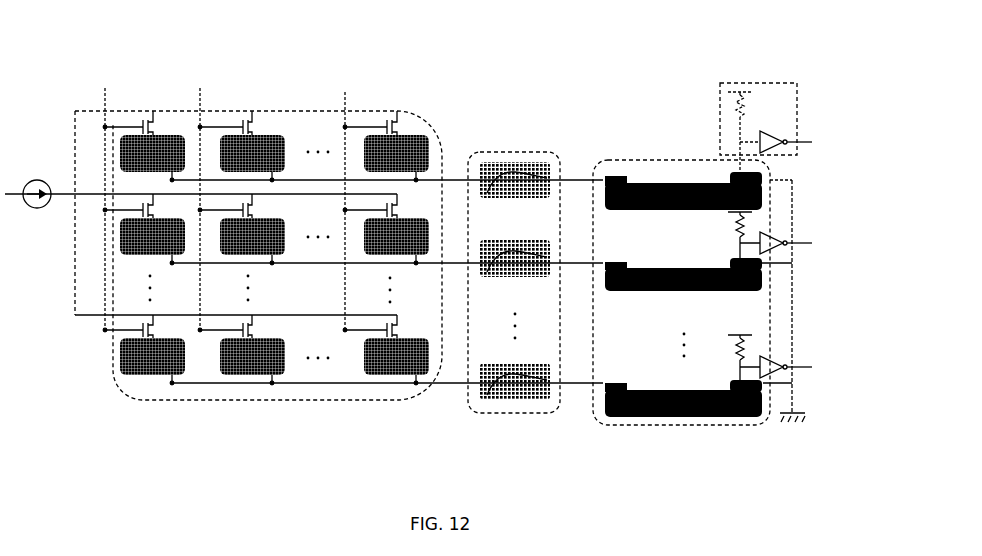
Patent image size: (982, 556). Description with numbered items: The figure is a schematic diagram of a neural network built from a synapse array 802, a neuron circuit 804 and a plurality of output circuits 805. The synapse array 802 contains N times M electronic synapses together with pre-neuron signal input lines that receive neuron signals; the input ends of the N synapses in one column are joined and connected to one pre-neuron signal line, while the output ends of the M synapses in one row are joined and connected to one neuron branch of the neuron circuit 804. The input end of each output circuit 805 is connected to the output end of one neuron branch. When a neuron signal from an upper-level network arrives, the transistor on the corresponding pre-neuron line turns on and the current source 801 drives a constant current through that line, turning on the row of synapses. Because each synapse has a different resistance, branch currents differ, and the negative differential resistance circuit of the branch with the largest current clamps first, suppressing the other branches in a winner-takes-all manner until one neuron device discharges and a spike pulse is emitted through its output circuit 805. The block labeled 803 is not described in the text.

The current source 801 is at (37, 208).
The synapse array 802 is at (275, 403).
The activation function block 803 is at (515, 417).
The neuron circuit 804 is at (682, 430).
The output circuit 805 is at (797, 118).